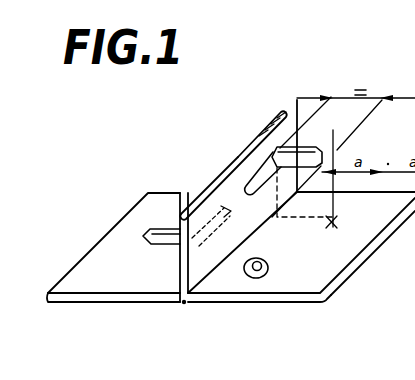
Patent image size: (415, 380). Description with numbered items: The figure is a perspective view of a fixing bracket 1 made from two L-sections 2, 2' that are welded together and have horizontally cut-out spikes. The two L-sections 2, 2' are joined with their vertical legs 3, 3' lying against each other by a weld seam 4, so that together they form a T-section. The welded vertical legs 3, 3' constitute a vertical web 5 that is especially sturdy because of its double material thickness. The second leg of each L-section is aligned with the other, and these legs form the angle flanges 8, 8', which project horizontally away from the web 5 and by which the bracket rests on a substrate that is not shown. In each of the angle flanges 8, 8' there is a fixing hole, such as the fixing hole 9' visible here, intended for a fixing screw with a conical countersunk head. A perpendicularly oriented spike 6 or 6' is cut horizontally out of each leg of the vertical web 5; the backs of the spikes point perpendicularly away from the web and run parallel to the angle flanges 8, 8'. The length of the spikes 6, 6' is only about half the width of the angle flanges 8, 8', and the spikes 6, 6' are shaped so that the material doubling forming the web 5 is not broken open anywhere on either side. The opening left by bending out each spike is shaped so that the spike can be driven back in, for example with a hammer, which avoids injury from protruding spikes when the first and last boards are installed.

The fixing bracket 1 is at (230, 201).
The L-section 2 is at (175, 206).
The L-section 2' is at (353, 316).
The vertical leg 3 is at (233, 134).
The vertical leg 3' is at (308, 114).
The weld seam 4 is at (184, 303).
The vertical web 5 is at (236, 155).
The spike 6 is at (170, 195).
The spike 6' is at (325, 168).
The angle flange 8 is at (112, 247).
The angle flange 8' is at (301, 247).
The fixing hole 9' is at (272, 301).